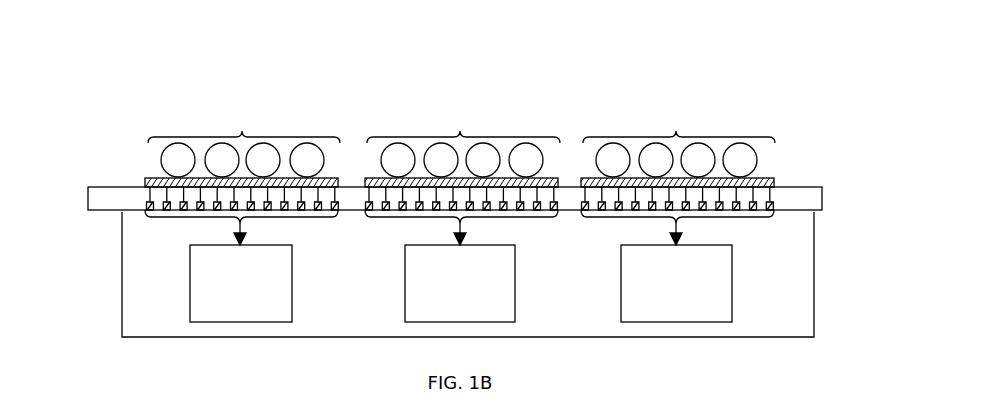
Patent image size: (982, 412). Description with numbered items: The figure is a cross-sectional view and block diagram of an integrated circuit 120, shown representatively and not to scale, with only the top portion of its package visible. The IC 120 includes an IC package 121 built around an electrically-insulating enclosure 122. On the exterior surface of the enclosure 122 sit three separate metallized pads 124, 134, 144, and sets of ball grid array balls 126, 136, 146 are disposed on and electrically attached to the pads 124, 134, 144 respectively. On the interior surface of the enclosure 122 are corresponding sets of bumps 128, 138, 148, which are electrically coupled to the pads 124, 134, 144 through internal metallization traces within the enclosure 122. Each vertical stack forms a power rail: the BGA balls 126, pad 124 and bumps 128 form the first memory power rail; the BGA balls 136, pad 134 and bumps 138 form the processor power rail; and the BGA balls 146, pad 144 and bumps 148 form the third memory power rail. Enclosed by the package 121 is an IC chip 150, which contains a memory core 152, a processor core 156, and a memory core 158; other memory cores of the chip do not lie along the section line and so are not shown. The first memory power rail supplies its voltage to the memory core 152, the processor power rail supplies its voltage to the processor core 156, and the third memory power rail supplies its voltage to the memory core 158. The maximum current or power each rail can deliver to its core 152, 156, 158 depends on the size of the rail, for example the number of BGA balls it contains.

The integrated circuit (IC) 120 is at (500, 52).
The IC package 121 is at (848, 143).
The electrically-insulating enclosure 122 is at (105, 187).
The metallized pad 124 is at (150, 180).
The ball grid array (BGA) balls 126 is at (221, 158).
The bumps 128 is at (148, 214).
The metallized pad 134 is at (368, 178).
The ball grid array (BGA) balls 136 is at (440, 158).
The bumps 138 is at (386, 213).
The metallized pad 144 is at (586, 178).
The ball grid array (BGA) balls 146 is at (655, 157).
The bumps 148 is at (772, 212).
The IC chip 150 is at (122, 262).
The memory core 152 is at (241, 283).
The processor core 156 is at (460, 283).
The memory core 158 is at (676, 283).